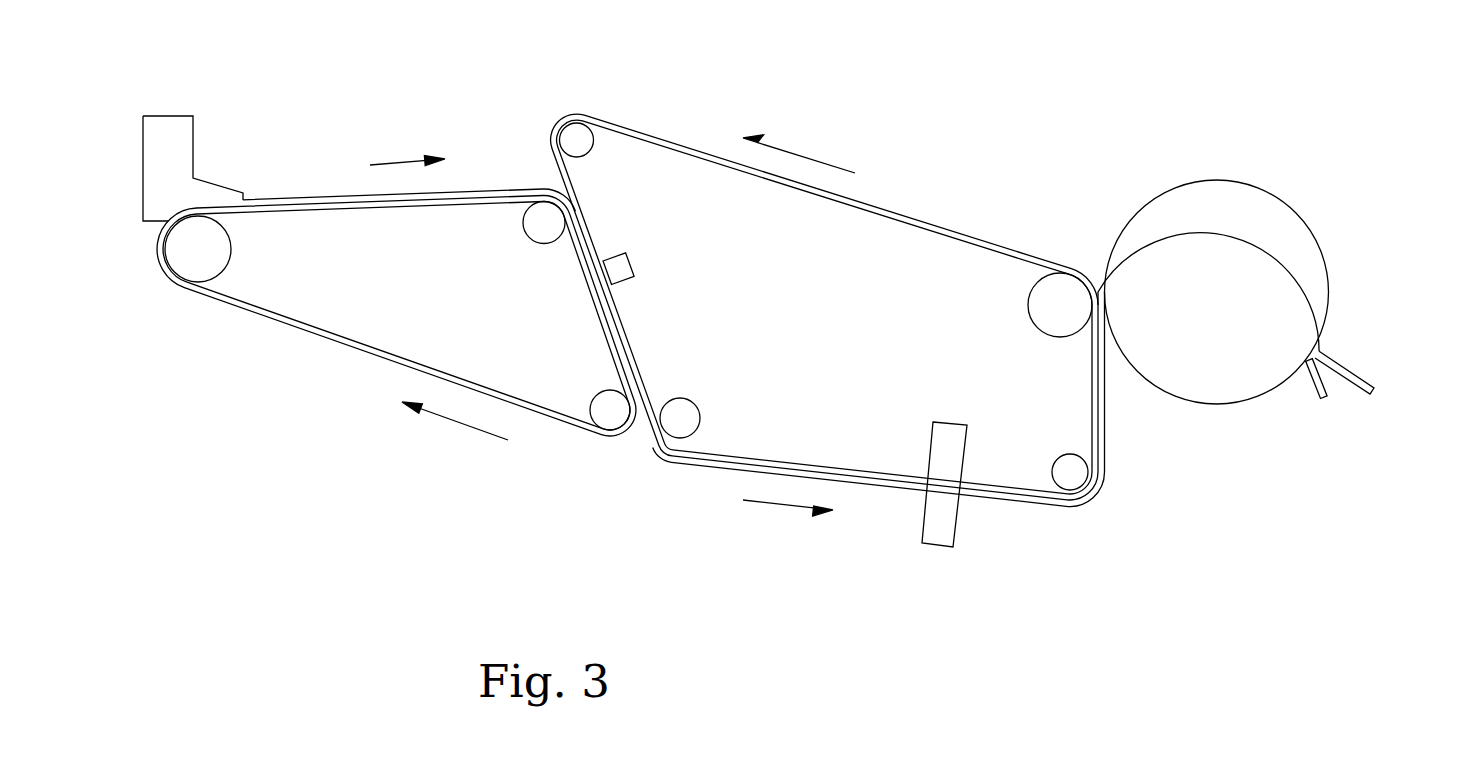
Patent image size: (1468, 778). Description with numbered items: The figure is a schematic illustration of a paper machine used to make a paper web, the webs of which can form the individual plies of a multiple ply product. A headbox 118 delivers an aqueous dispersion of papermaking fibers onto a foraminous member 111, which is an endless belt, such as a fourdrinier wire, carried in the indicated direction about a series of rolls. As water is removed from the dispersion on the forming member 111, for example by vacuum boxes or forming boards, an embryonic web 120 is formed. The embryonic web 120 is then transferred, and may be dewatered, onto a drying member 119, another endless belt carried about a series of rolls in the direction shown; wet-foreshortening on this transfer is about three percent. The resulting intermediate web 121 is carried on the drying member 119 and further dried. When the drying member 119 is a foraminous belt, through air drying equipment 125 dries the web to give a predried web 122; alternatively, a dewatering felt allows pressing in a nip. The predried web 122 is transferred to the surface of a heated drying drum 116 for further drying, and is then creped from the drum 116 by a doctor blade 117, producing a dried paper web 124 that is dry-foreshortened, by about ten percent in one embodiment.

The foraminous member 111 is at (327, 338).
The heated drying drum 116 is at (1283, 307).
The doctor blade 117 is at (1320, 397).
The headbox 118 is at (182, 160).
The drying member 119 is at (922, 218).
The embryonic web 120 is at (343, 193).
The intermediate web 121 is at (668, 460).
The predried web 122 is at (1065, 505).
The dried paper web 124 is at (1347, 370).
The through air drying equipment 125 is at (945, 445).